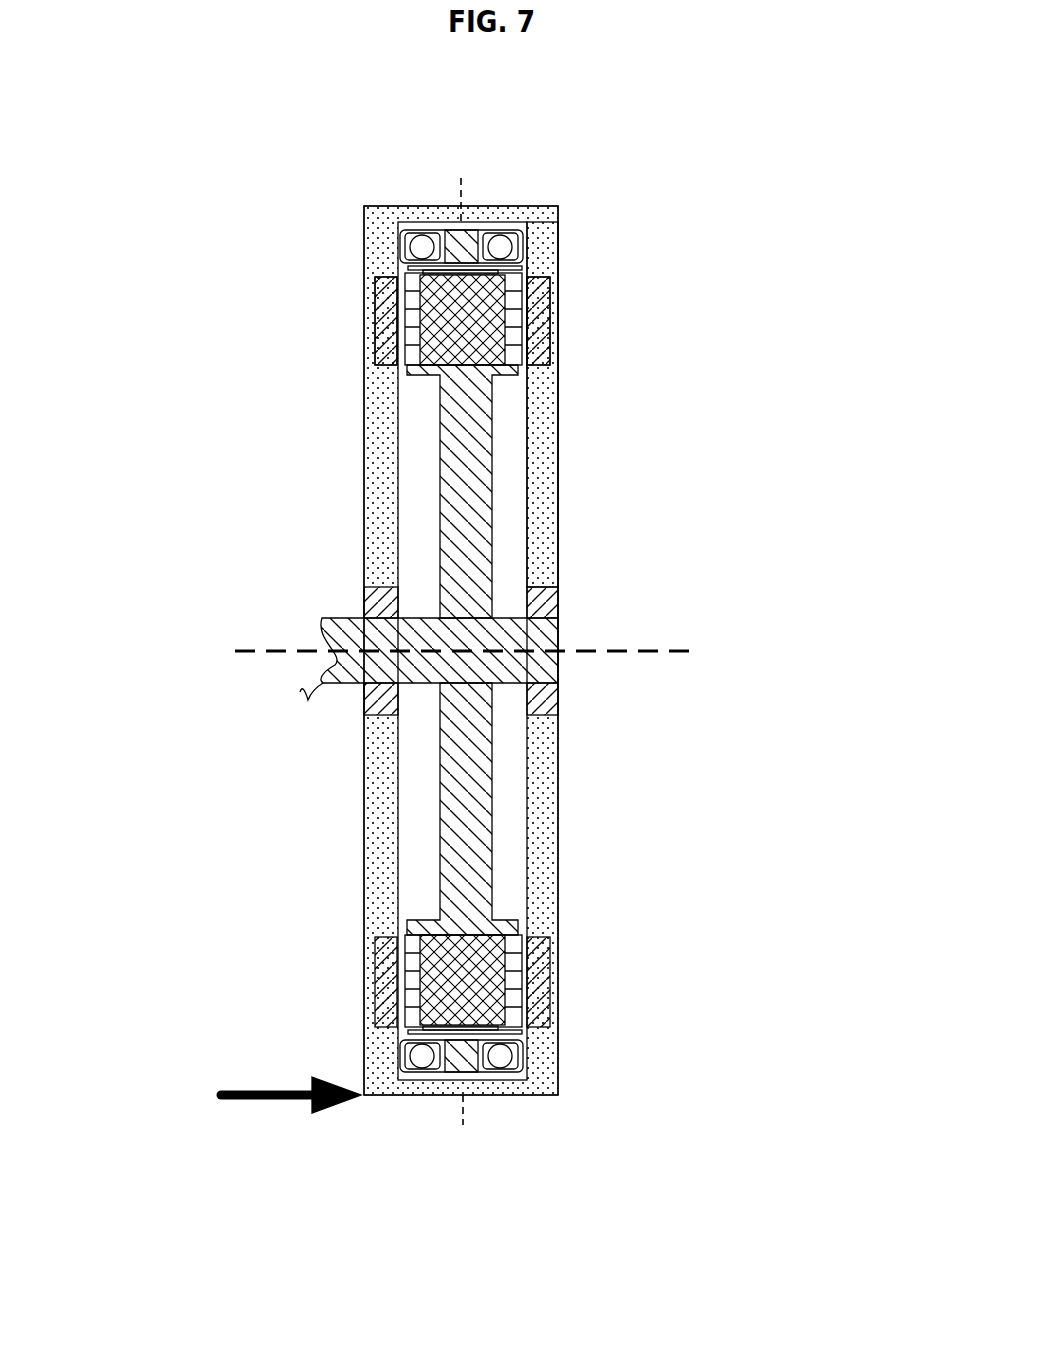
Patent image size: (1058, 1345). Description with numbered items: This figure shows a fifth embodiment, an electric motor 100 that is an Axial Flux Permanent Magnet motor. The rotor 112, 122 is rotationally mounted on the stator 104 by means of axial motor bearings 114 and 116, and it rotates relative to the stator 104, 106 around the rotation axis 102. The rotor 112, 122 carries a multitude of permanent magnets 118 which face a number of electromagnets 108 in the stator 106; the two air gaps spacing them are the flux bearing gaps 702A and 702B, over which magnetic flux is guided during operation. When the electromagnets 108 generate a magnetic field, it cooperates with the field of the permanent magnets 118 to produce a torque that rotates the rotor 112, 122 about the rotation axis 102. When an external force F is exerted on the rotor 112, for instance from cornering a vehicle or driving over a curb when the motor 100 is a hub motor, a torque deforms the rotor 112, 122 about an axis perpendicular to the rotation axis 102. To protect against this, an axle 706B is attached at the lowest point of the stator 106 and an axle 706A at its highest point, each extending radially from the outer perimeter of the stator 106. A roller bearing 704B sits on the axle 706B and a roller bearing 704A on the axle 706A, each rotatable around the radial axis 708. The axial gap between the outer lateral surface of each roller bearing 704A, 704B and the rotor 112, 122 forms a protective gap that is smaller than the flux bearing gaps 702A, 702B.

The electric motor 100 is at (597, 147).
The rotation axis 102 is at (688, 651).
The stator 104 is at (513, 637).
The stator 106 is at (448, 792).
The electromagnets 108 is at (467, 340).
The rotor 112 is at (365, 900).
The axial motor bearing 114 is at (373, 607).
The axial motor bearing 116 is at (543, 600).
The permanent magnets 118 is at (377, 350).
The rotor 122 is at (543, 453).
The flux bearing gap 702A is at (400, 327).
The flux bearing gap 702B is at (527, 342).
The roller bearing 704A is at (500, 248).
The roller bearing 704B is at (507, 1053).
The axle 706A is at (460, 252).
The axle 706B is at (463, 1060).
The axis 708 is at (458, 185).
The external force F is at (298, 1105).